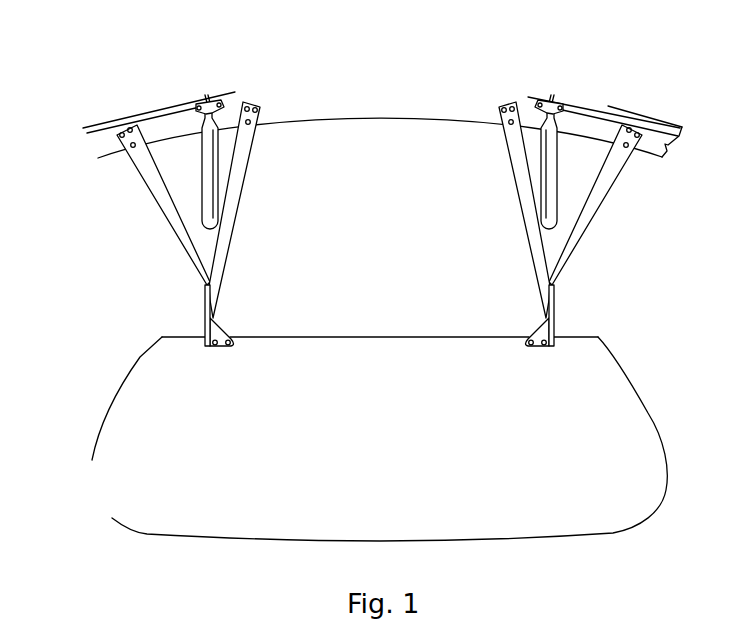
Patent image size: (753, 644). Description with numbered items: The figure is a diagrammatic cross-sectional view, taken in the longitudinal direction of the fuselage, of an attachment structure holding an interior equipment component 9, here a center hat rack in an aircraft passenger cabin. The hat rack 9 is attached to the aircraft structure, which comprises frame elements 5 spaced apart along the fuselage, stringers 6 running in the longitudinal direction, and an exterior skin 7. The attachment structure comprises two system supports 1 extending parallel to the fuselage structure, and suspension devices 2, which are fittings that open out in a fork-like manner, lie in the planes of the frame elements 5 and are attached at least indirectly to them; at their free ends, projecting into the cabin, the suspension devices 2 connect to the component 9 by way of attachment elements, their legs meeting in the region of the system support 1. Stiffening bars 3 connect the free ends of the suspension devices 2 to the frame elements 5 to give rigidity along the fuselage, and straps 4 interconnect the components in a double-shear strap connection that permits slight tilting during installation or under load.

The system support 1 is at (193, 310).
The suspension device 2 is at (200, 259).
The stiffening bar 3 is at (186, 181).
The strap 4 is at (191, 98).
The frame element 5 is at (280, 99).
The stringer 6 is at (567, 88).
The exterior skin 7 is at (670, 109).
The interior equipment component 9 is at (627, 417).